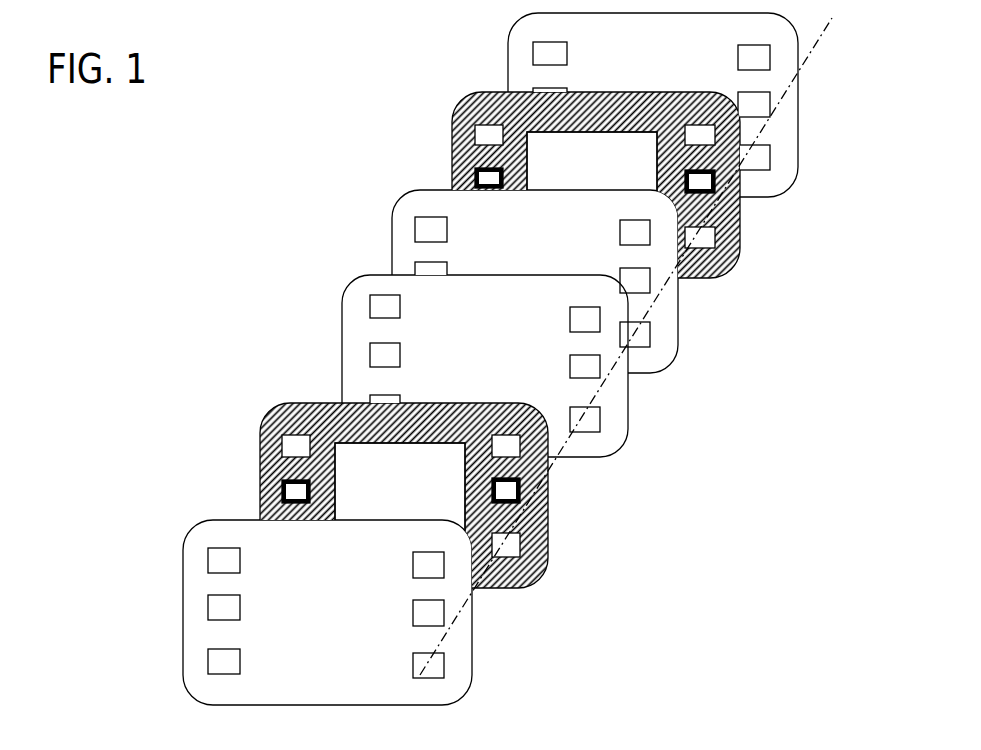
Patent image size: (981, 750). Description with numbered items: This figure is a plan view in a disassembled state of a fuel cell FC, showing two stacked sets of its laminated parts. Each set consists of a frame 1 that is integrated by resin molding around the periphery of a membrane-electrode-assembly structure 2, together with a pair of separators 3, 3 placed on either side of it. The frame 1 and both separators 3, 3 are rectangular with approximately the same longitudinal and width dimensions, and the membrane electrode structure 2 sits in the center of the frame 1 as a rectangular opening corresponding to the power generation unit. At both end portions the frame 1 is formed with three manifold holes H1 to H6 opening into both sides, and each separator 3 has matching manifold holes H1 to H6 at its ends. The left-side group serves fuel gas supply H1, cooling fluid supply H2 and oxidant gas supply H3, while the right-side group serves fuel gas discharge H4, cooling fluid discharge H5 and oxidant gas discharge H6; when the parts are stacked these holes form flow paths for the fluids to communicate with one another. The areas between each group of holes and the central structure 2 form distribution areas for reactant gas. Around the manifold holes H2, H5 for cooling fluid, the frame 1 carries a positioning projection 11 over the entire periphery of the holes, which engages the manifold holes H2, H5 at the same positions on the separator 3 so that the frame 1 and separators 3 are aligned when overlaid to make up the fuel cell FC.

The fuel cell FC is at (432, 366).
The frame 1 is at (415, 403).
The membrane-electrode-assembly structure 2 is at (442, 457).
The separator 3 is at (543, 307).
The positioning projection 11 is at (338, 250).
The manifold hole for fuel gas supply H1 is at (382, 303).
The manifold hole for cooling fluid supply H2 is at (382, 350).
The manifold hole for oxidant gas supply H3 is at (382, 397).
The manifold hole for fuel gas discharge H4 is at (590, 318).
The manifold hole for cooling fluid discharge H5 is at (590, 368).
The manifold hole for oxidant gas discharge H6 is at (590, 417).